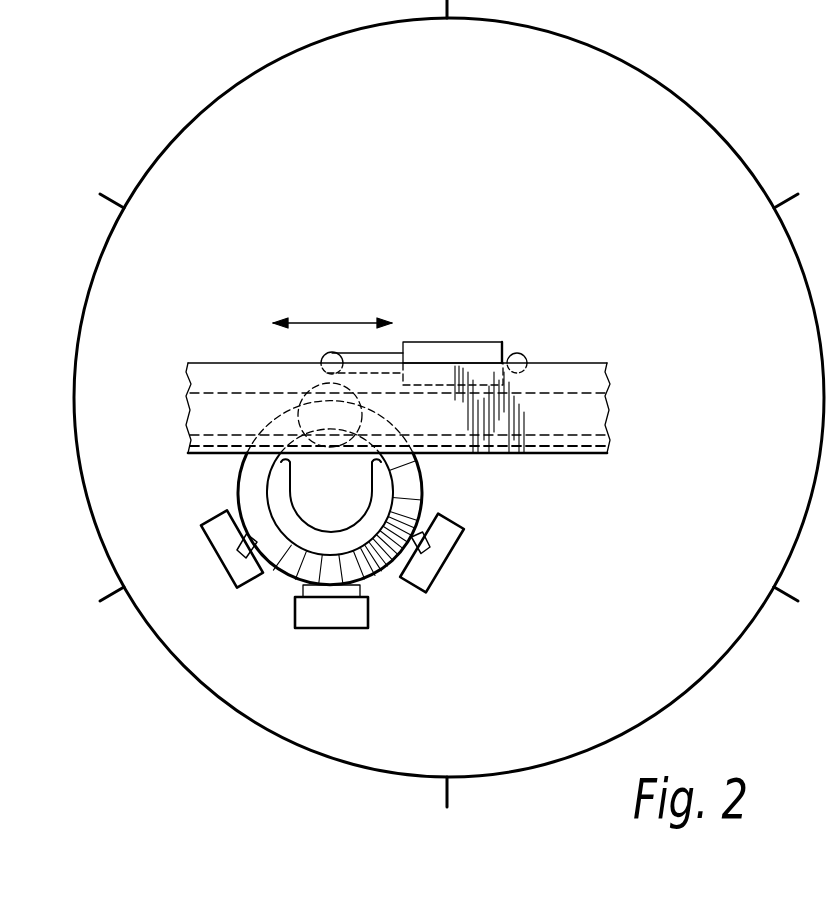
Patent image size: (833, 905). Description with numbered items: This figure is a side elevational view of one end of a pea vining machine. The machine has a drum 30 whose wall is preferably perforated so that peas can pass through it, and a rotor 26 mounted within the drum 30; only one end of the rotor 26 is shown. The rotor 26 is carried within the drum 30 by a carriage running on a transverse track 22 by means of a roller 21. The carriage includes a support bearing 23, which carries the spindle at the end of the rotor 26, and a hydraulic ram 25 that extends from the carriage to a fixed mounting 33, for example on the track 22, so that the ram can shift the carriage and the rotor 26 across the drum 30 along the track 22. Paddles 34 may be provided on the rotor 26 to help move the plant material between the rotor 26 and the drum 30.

The drum 30 is at (222, 95).
The transverse track 22 is at (225, 372).
The roller 21 is at (310, 383).
The hydraulic ram 25 is at (463, 348).
The fixed mounting 33 is at (522, 356).
The rotor 26 is at (297, 537).
The support bearing 23 is at (307, 481).
The paddles 34 is at (331, 615).